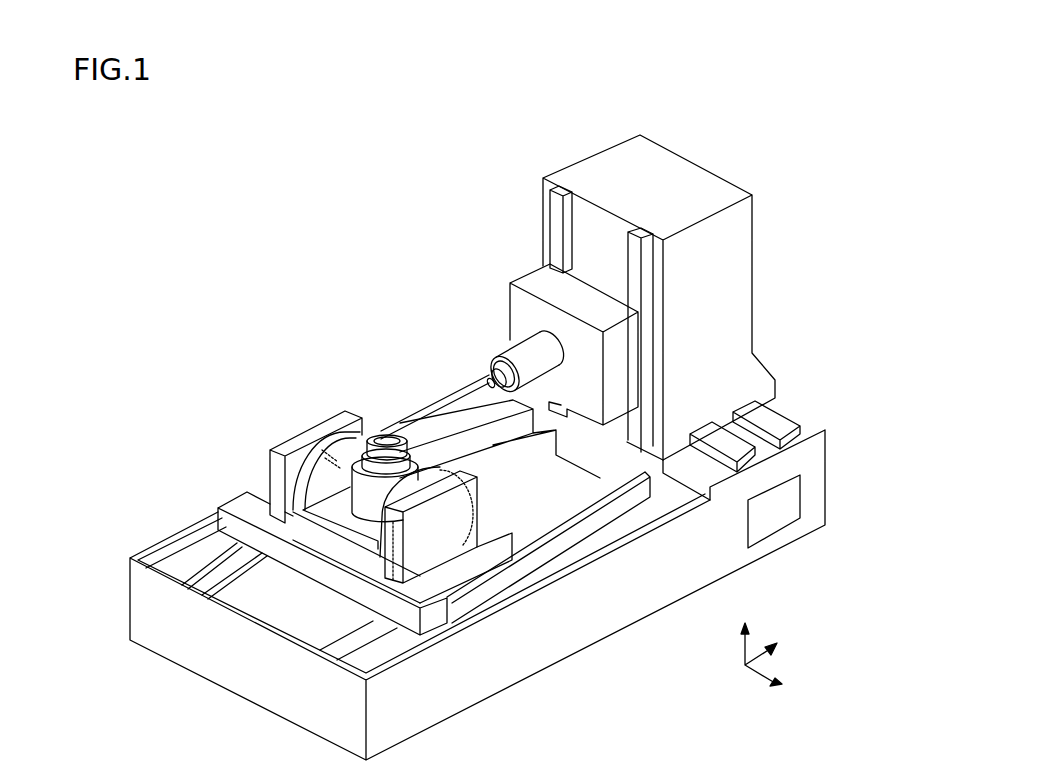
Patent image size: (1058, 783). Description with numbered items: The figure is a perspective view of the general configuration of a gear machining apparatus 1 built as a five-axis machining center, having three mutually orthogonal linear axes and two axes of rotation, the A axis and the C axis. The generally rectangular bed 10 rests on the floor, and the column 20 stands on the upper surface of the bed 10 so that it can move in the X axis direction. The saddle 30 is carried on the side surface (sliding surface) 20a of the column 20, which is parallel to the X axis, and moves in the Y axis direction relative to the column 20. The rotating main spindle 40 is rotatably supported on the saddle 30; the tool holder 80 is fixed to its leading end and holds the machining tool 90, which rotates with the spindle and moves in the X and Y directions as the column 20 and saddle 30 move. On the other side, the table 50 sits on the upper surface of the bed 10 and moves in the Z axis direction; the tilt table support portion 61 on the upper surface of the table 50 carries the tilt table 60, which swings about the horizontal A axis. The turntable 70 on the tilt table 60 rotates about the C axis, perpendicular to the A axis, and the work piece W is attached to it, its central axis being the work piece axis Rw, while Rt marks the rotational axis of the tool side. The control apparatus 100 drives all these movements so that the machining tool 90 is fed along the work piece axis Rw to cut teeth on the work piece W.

The gear machining apparatus 1 is at (300, 238).
The bed 10 is at (565, 657).
The column 20 is at (678, 272).
The side surface (sliding surface) 20a is at (604, 222).
The saddle 30 is at (534, 271).
The rotating main spindle 40 is at (528, 352).
The table 50 is at (237, 506).
The tilt table 60 is at (330, 435).
The tilt table support portion 61 is at (266, 507).
The turntable 70 is at (357, 446).
The tool holder 80 is at (508, 376).
The machining tool 90 is at (494, 380).
The control apparatus 100 is at (795, 499).
The work piece W is at (388, 426).
The C axis C is at (388, 508).
The A axis A is at (290, 437).
The work piece axis Rw is at (389, 443).
The tool rotation axis Rt is at (488, 382).